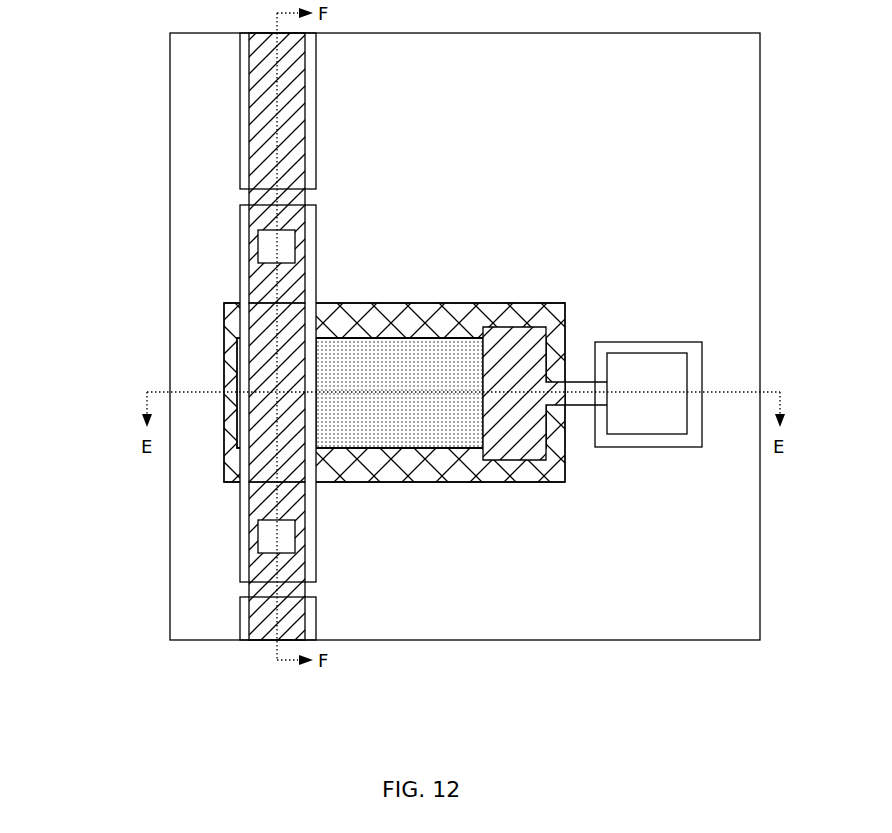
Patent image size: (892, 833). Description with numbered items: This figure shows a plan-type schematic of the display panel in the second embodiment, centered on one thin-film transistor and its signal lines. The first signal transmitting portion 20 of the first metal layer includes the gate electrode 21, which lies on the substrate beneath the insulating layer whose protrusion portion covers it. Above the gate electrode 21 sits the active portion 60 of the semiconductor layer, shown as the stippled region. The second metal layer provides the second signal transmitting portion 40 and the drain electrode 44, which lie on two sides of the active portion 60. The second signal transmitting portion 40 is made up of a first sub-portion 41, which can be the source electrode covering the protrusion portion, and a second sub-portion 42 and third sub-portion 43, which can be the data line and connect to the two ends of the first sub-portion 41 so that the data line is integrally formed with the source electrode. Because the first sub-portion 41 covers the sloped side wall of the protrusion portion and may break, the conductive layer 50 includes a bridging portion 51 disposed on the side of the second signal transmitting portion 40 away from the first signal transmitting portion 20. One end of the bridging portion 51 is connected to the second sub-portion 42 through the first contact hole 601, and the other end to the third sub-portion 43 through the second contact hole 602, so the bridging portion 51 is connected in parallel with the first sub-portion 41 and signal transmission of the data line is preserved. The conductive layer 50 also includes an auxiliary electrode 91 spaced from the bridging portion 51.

The second signal transmitting portion 40 is at (185, 336).
The first sub-portion 41 is at (270, 321).
The second sub-portion 42 is at (262, 122).
The third sub-portion 43 is at (263, 506).
The drain electrode 44 is at (530, 342).
The conductive layer 50 is at (185, 336).
The bridging portion 51 is at (240, 225).
The auxiliary electrode 91 is at (240, 177).
The first contact hole 601 is at (262, 247).
The second contact hole 602 is at (262, 538).
The active portion 60 is at (375, 422).
The first signal transmitting portion 20 is at (554, 515).
The gate electrode 21 is at (407, 470).